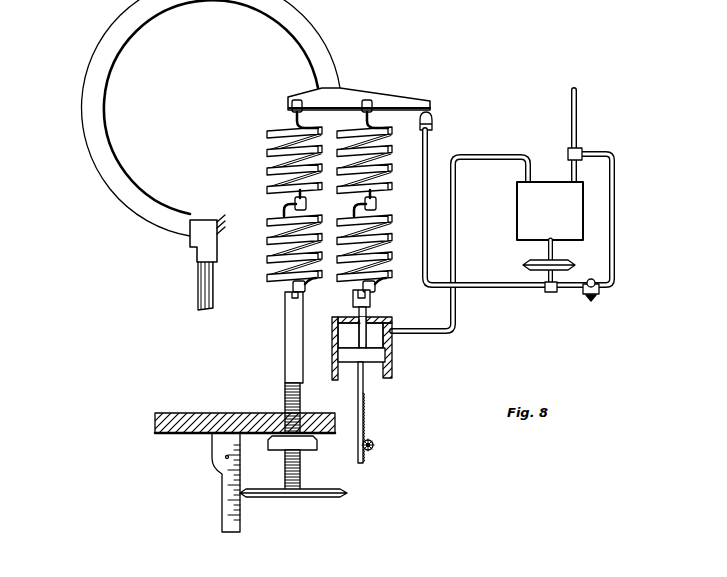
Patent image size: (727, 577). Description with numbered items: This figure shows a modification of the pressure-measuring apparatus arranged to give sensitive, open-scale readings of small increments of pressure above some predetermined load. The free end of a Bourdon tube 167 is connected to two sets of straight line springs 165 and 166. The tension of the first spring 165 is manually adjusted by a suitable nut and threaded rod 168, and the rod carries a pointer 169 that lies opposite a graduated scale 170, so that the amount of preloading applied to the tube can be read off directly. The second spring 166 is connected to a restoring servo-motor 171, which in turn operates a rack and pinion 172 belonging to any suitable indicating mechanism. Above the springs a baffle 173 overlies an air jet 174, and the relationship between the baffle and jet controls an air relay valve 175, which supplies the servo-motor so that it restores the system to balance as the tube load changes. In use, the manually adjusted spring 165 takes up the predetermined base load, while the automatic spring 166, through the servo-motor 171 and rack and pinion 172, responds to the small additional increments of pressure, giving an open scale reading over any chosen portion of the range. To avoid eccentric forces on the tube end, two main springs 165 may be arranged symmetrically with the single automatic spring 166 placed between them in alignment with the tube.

The spring 165 is at (262, 210).
The spring 166 is at (382, 217).
The Bourdon tube 167 is at (101, 143).
The nut and threaded rod 168 is at (286, 372).
The pointer 169 is at (268, 490).
The graduated scale 170 is at (233, 518).
The restoring servo-motor 171 is at (395, 378).
The rack and pinion 172 is at (379, 440).
The baffle 173 is at (405, 100).
The air jet 174 is at (434, 123).
The air relay valve 175 is at (525, 210).